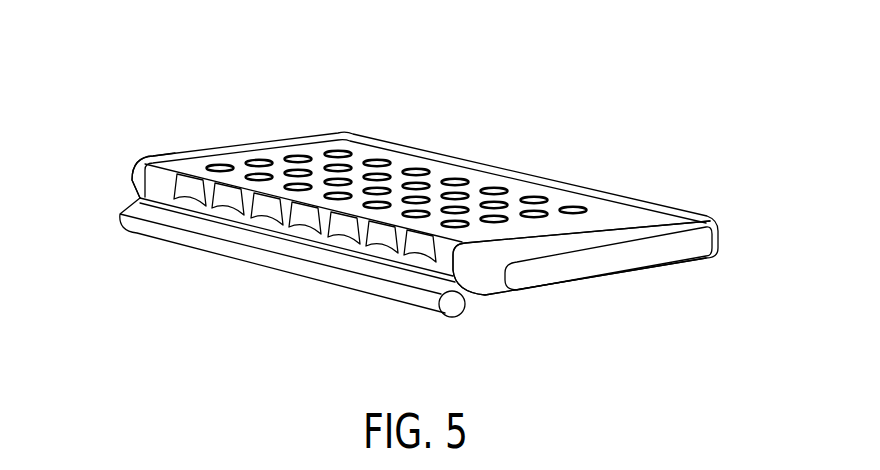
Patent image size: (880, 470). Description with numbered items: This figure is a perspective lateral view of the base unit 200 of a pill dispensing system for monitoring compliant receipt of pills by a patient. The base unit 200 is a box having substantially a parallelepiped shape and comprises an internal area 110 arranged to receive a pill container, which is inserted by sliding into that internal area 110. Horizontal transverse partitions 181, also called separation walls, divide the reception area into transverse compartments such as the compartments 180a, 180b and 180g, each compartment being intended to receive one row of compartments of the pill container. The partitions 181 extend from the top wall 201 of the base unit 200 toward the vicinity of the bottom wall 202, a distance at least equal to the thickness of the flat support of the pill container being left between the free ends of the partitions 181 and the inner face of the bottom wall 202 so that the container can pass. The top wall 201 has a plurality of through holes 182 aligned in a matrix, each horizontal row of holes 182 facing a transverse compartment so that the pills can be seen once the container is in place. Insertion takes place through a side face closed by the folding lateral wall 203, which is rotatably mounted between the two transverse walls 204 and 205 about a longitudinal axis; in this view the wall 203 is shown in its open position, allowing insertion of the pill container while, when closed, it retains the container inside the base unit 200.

The base unit 200 is at (558, 178).
The top wall 201 is at (481, 168).
The through holes 182 is at (381, 162).
The transverse wall 205 is at (142, 153).
The internal area 110 is at (226, 212).
The transverse compartment 180a is at (183, 187).
The transverse compartment 180b is at (225, 192).
The transverse compartment 180g is at (432, 250).
The horizontal transverse partitions 181 is at (402, 247).
The folding lateral wall 203 is at (270, 268).
The bottom wall 202 is at (610, 276).
The transverse wall 204 is at (683, 254).